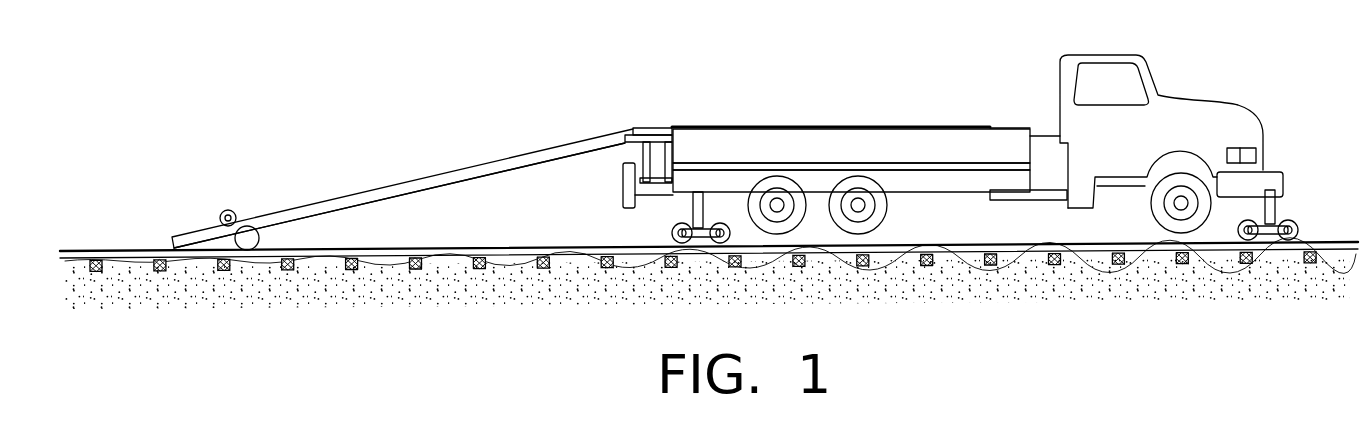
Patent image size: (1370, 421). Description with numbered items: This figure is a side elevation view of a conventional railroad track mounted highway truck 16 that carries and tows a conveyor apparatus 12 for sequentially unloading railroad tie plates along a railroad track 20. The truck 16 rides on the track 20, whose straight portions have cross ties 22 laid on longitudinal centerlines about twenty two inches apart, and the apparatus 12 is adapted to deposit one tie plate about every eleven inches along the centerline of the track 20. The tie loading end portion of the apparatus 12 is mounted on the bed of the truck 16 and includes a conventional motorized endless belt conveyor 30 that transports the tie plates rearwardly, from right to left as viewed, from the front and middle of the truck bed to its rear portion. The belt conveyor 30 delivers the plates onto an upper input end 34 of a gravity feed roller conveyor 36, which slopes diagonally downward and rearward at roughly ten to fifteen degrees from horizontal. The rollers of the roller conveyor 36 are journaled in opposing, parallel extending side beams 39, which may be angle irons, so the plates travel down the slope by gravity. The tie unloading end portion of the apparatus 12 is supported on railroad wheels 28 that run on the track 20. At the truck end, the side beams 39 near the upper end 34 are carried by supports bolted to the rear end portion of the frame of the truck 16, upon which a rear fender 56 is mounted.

The conveyor apparatus 12 is at (667, 94).
The railroad track mounted truck 16 is at (1018, 126).
The railroad track 20 is at (1318, 241).
The cross ties 22 is at (478, 270).
The railroad wheels 28 is at (256, 242).
The belt conveyor 30 is at (676, 119).
The upper input end 34 is at (634, 128).
The gravity feed roller conveyor 36 is at (481, 158).
The side beams 39 is at (503, 170).
The rear fender 56 is at (628, 210).